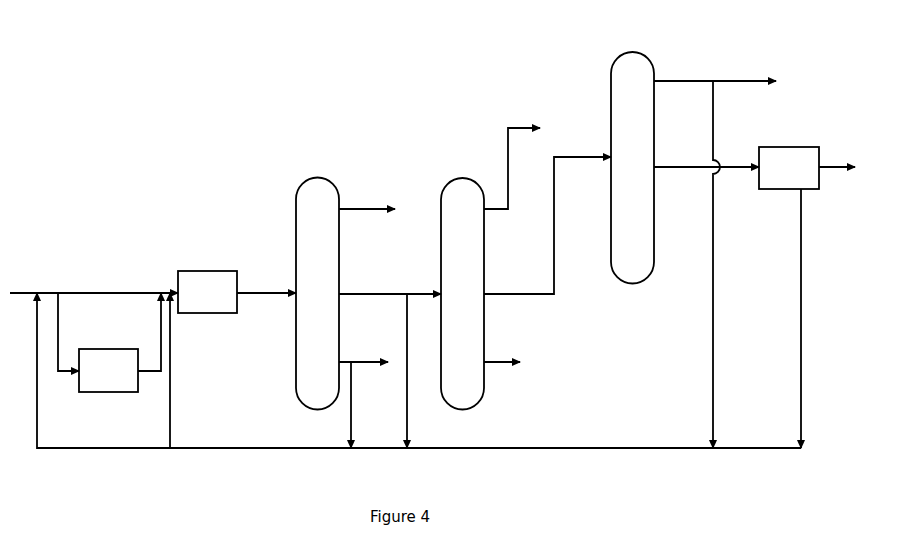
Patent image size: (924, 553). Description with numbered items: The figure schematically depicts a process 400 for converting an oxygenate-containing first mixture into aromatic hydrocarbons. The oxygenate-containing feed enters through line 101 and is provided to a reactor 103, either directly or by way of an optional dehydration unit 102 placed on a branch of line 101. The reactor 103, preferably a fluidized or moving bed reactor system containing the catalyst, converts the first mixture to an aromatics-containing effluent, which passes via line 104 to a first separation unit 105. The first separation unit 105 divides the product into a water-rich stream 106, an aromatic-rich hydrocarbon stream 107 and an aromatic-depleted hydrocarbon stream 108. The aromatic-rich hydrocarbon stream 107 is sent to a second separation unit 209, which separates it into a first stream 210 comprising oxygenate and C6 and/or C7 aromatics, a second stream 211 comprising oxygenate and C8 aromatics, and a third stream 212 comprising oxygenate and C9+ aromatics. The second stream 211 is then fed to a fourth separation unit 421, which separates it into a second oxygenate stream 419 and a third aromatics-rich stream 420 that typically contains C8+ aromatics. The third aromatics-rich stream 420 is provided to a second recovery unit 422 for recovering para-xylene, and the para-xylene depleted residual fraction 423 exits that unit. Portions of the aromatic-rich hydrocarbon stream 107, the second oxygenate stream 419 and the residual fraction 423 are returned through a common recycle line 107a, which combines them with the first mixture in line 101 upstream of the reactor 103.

The process 400 is at (187, 98).
The line 101 is at (97, 292).
The dehydration unit 102 is at (109, 342).
The reactor 103 is at (207, 292).
The line 104 is at (270, 292).
The first separation unit 105 is at (317, 294).
The water-rich stream 106 is at (367, 205).
The aromatic-rich hydrocarbon stream 107 is at (365, 293).
The recycle line 107a is at (584, 447).
The aromatic-depleted hydrocarbon stream 108 is at (369, 360).
The second separation unit 209 is at (462, 293).
The first stream 210 is at (518, 125).
The second stream 211 is at (498, 290).
The third stream 212 is at (513, 362).
The fourth separation unit 421 is at (632, 168).
The second oxygenate stream 419 is at (703, 81).
The third aromatics-rich stream 420 is at (692, 170).
The second recovery unit 422 is at (807, 168).
The residual fraction 423 is at (800, 222).